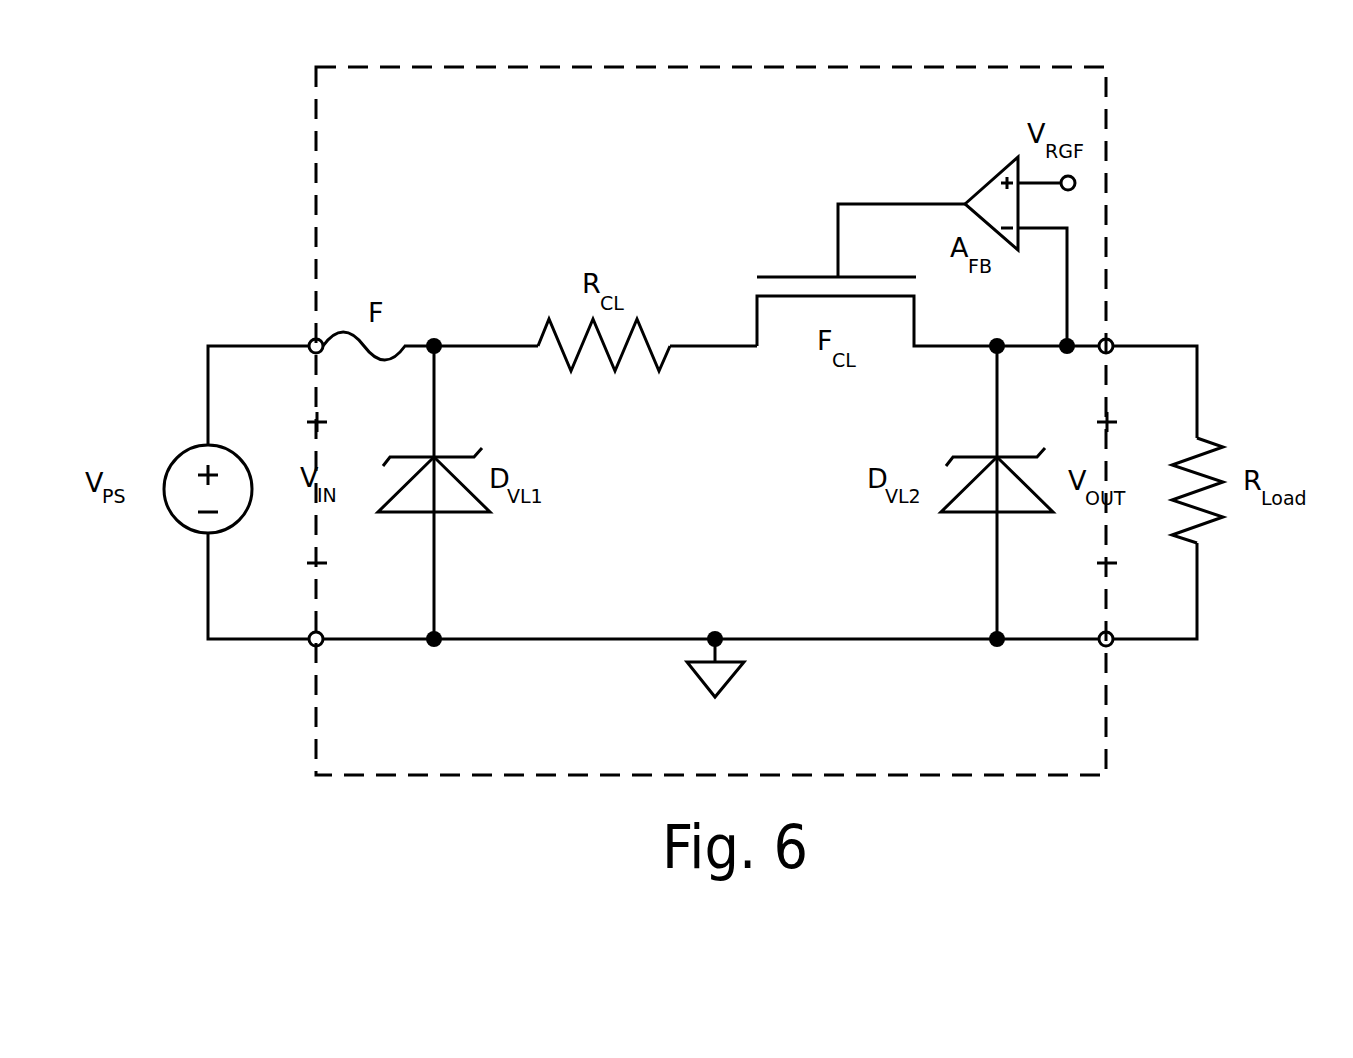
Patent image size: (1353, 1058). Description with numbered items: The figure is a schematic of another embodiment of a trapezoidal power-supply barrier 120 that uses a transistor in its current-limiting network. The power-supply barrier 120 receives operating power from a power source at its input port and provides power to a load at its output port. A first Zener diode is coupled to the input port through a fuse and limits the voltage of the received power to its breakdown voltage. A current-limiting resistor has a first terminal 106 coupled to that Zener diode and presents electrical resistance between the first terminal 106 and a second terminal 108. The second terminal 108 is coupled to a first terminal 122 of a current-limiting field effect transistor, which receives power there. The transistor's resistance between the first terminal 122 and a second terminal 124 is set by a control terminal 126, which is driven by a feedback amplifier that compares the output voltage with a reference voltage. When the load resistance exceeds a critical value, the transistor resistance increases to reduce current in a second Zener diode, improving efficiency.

The power-supply barrier 120 is at (560, 136).
The first terminal of resistor RCL 106 is at (497, 333).
The second terminal of resistor RCL 108 is at (699, 368).
The first terminal of current-limiting FET FCL 122 is at (719, 318).
The second terminal of current-limiting FET FCL 124 is at (933, 318).
The control terminal of current-limiting FET FCL 126 is at (811, 243).